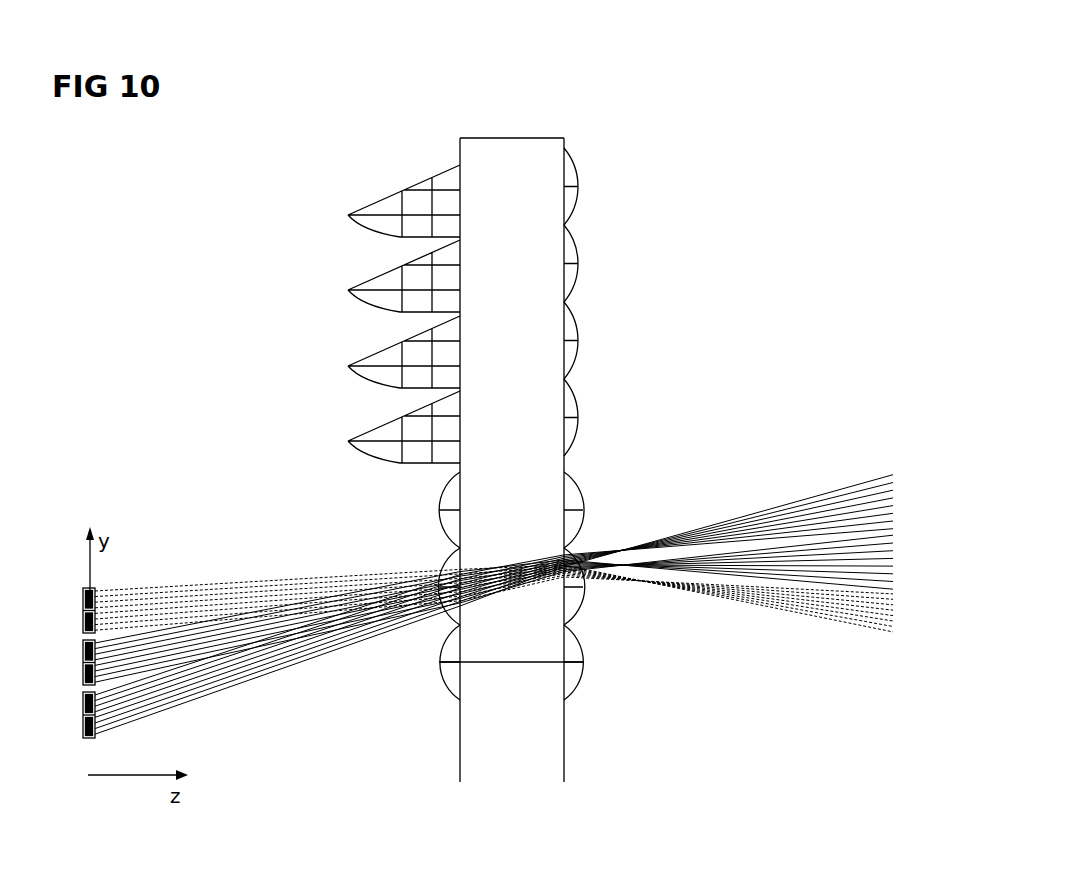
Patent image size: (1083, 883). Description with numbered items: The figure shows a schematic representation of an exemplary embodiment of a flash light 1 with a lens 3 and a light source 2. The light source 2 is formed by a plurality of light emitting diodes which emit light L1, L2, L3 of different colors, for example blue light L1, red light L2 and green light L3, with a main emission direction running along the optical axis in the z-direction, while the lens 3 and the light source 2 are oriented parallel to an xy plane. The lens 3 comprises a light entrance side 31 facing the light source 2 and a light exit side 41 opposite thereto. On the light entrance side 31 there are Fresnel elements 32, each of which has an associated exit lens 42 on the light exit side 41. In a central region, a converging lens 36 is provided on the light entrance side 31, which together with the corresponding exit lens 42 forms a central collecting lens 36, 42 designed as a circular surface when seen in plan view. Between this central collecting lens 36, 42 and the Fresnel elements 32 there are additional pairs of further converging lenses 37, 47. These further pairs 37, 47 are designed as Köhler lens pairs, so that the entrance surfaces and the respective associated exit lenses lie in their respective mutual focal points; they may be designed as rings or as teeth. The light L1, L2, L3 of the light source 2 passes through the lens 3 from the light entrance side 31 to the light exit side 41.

The flash light 1 is at (733, 124).
The light source 2 is at (78, 588).
The lens 3 is at (511, 765).
The light entrance side 31 is at (386, 287).
The Fresnel elements 32 is at (348, 443).
The converging lens 36 is at (446, 690).
The further converging lenses 37 is at (444, 562).
The light exit side 41 is at (603, 409).
The exit lens 42 is at (580, 407).
The further converging lenses 47 is at (580, 610).
The blue light L1 is at (182, 690).
The red light L2 is at (193, 647).
The green light L3 is at (227, 592).